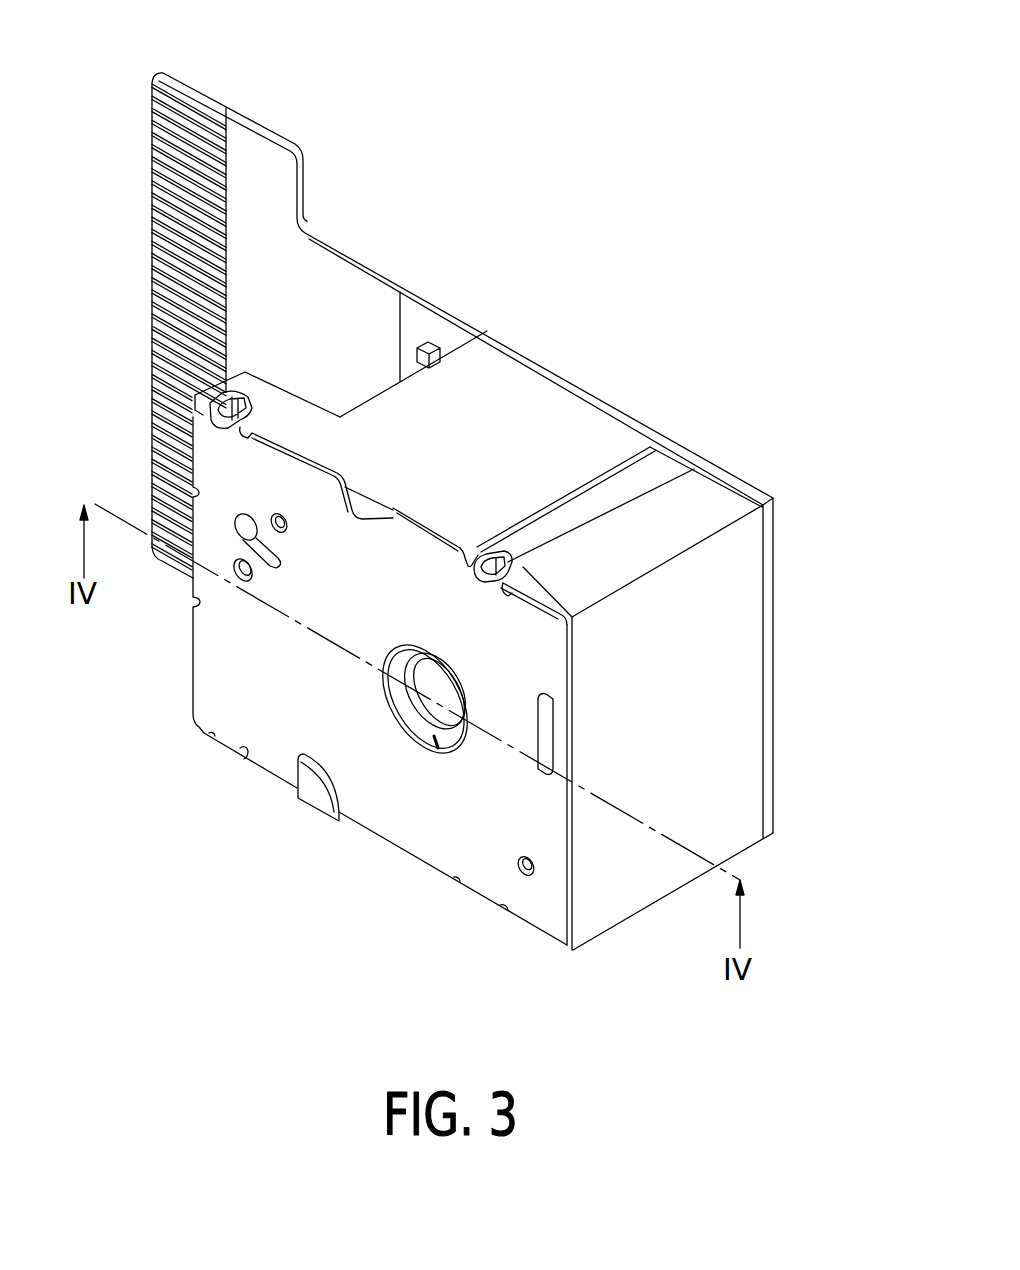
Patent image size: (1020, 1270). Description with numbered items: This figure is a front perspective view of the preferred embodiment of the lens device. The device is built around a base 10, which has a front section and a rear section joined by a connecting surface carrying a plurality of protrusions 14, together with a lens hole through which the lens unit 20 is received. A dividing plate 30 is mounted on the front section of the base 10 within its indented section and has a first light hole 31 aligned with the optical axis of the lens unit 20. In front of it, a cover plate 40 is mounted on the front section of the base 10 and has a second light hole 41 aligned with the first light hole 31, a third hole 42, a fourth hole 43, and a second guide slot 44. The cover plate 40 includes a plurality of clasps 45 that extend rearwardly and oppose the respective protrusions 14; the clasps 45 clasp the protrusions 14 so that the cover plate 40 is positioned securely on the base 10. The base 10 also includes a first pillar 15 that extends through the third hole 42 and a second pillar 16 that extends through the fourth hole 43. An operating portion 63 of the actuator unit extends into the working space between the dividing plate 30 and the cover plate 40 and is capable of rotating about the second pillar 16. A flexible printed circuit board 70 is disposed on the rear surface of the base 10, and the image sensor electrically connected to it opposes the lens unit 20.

The base 10 is at (563, 437).
The protrusions 14 is at (239, 402).
The first pillar 15 is at (281, 535).
The second pillar 16 is at (241, 575).
The lens unit 20 is at (437, 742).
The dividing plate 30 is at (420, 731).
The first light hole 31 is at (439, 692).
The cover plate 40 is at (190, 677).
The second light hole 41 is at (392, 718).
The third hole 42 is at (288, 524).
The fourth hole 43 is at (243, 588).
The second guide slot 44 is at (268, 563).
The clasps 45 is at (257, 410).
The operating portion 63 is at (243, 532).
The flexible printed circuit board 70 is at (268, 131).